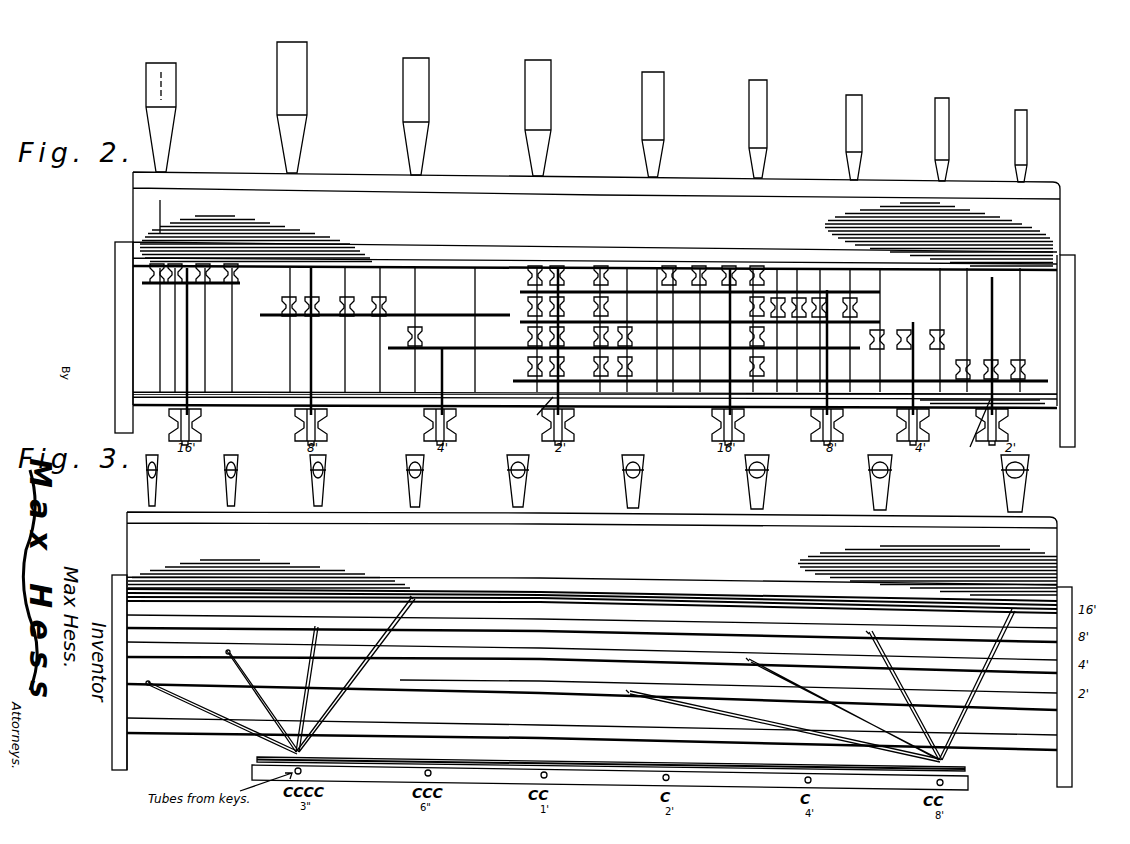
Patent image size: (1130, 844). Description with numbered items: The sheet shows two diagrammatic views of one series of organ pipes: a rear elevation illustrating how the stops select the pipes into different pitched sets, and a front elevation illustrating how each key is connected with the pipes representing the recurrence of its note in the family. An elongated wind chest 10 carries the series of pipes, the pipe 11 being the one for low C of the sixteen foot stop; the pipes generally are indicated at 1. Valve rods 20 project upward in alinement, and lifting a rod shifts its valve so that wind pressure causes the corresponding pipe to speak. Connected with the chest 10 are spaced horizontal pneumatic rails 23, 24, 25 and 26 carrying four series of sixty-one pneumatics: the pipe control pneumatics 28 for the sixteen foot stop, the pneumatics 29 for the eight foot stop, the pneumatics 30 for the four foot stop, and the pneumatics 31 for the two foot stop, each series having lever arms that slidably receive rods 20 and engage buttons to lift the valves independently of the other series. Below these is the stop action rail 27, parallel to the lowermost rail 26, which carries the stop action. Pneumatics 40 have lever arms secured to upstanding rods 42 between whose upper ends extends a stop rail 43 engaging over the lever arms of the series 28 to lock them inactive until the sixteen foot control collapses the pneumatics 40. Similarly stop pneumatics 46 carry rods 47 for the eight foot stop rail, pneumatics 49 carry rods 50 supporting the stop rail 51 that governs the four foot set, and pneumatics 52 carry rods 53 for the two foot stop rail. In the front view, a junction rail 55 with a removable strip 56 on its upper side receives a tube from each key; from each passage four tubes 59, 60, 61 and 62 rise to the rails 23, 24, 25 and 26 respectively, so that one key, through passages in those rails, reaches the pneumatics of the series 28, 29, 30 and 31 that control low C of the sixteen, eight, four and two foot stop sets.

In FIG. 2, the organ pipes 1 is at (602, 101).
In FIG. 3, the organ pipes 1 is at (183, 492).
In FIG. 2, the wind chest 10 is at (670, 198).
In FIG. 3, the wind chest 10 is at (1052, 566).
In FIG. 2, the pipe 11 is at (177, 88).
In FIG. 3, the pipe 11 is at (1018, 485).
In FIG. 2, the valve rods 20 is at (155, 322).
In FIG. 3, the pneumatic rail 23 is at (640, 602).
In FIG. 3, the pneumatic rail 24 is at (500, 628).
In FIG. 3, the pneumatic rail 25 is at (599, 659).
In FIG. 3, the pneumatic rail 26 is at (495, 680).
In FIG. 2, the stop action rail 27 is at (671, 405).
In FIG. 3, the stop action rail 27 is at (542, 740).
In FIG. 2, the pipe control pneumatics 28 is at (173, 260).
In FIG. 2, the pneumatics 29 is at (300, 297).
In FIG. 2, the pneumatics 30 is at (426, 334).
In FIG. 2, the pneumatics 31 is at (525, 365).
In FIG. 2, the pneumatics 40 is at (201, 419).
In FIG. 2, the upstanding rods 42 is at (190, 339).
In FIG. 2, the stop rail 43 is at (492, 288).
In FIG. 2, the stop pneumatics 46 is at (332, 419).
In FIG. 2, the upstanding rods 47 is at (313, 351).
In FIG. 2, the pneumatics 49 is at (466, 425).
In FIG. 2, the upstanding rods 50 is at (445, 376).
In FIG. 2, the stop rail 51 is at (700, 322).
In FIG. 2, the pneumatics 52 is at (584, 423).
In FIG. 2, the upstanding rods 53 is at (753, 426).
In FIG. 3, the junction rail 55 is at (870, 780).
In FIG. 3, the strip 56 is at (612, 763).
In FIG. 3, the tube 59 is at (362, 668).
In FIG. 3, the tube 60 is at (348, 708).
In FIG. 3, the tube 61 is at (802, 677).
In FIG. 3, the tube 62 is at (772, 714).